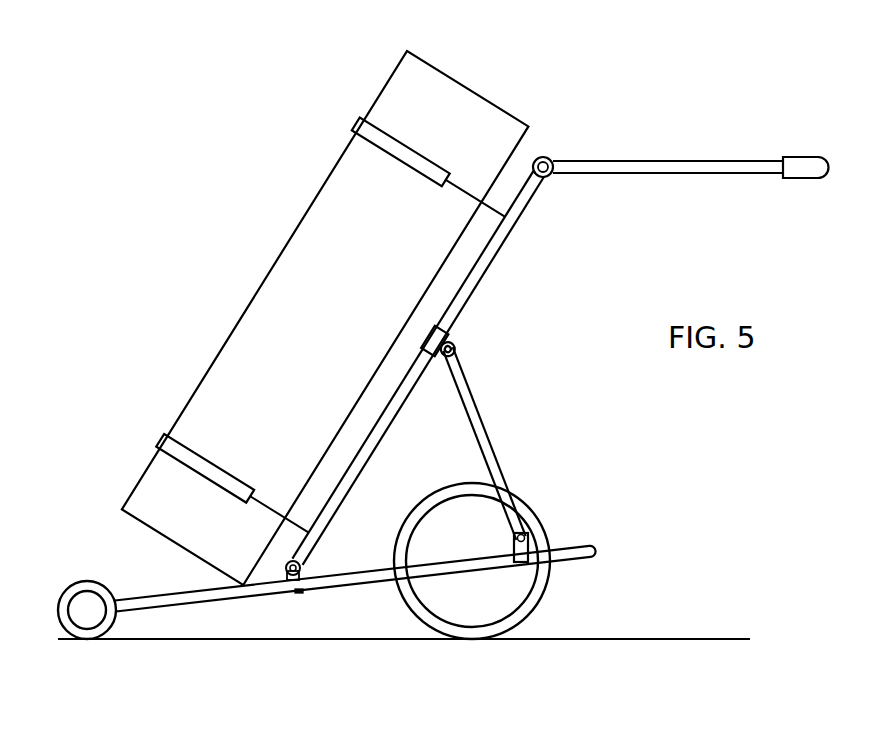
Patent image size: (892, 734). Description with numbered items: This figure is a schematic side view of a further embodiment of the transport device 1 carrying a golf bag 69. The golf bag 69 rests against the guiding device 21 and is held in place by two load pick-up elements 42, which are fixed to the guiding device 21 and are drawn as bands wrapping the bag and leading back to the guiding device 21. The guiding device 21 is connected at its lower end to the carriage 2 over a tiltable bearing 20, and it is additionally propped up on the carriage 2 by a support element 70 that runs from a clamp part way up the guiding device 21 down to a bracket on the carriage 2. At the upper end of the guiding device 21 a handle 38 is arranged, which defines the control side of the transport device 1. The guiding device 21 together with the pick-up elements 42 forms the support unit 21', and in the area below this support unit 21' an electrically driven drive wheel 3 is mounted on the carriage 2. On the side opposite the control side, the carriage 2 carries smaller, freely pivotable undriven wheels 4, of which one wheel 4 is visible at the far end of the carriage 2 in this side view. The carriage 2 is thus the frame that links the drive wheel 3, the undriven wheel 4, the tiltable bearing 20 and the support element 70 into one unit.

The transport device 1 is at (166, 222).
The carriage 2 is at (592, 537).
The drive wheel 3 is at (502, 580).
The undriven wheel 4 is at (92, 610).
The tiltable bearing 20 is at (288, 601).
The guiding device 21 is at (424, 372).
The support unit 21' is at (567, 92).
The handle 38 is at (810, 167).
The load pick-up element 42 is at (377, 136).
The golf bag 69 is at (345, 237).
The support element 70 is at (480, 440).